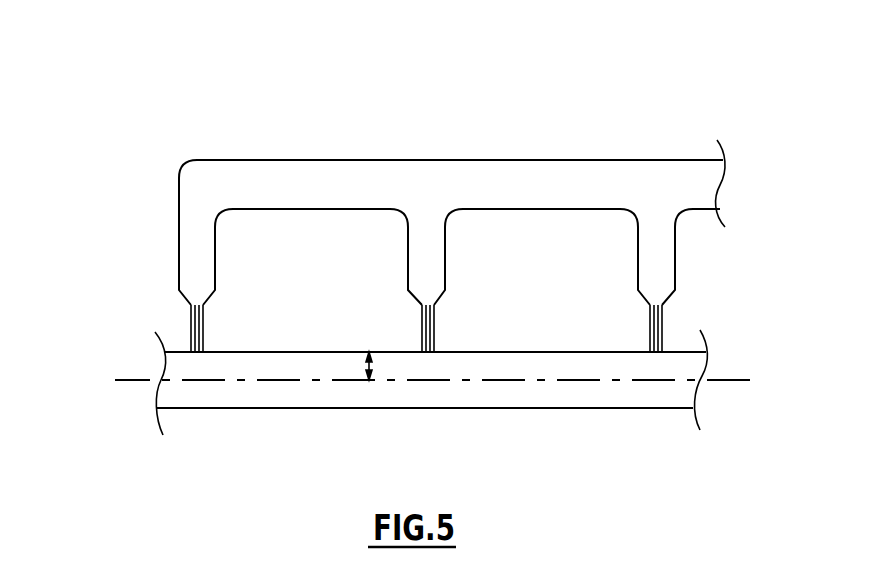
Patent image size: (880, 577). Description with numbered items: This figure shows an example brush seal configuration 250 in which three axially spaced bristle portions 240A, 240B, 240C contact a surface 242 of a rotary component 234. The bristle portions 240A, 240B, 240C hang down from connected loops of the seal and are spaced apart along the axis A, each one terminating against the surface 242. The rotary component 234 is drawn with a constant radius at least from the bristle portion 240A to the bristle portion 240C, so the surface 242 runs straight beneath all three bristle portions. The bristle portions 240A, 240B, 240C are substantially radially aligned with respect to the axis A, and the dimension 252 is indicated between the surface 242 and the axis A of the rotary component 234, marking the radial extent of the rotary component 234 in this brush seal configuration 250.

The brush seal configuration 250 is at (103, 116).
The bristle portion 240A is at (184, 318).
The bristle portion 240B is at (414, 318).
The bristle portion 240C is at (644, 318).
The surface 242 is at (299, 352).
The rotary component 234 is at (299, 398).
The radial distance 252 is at (373, 367).